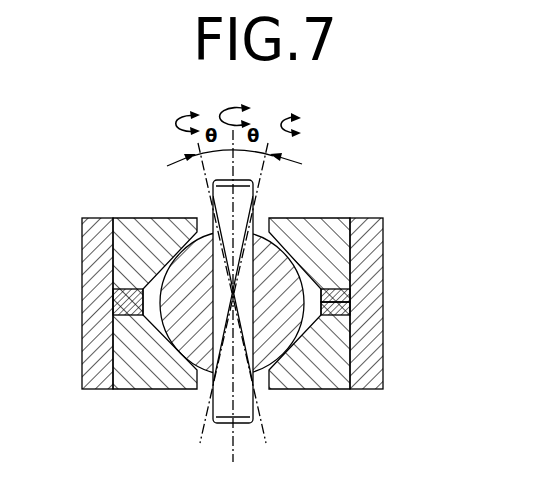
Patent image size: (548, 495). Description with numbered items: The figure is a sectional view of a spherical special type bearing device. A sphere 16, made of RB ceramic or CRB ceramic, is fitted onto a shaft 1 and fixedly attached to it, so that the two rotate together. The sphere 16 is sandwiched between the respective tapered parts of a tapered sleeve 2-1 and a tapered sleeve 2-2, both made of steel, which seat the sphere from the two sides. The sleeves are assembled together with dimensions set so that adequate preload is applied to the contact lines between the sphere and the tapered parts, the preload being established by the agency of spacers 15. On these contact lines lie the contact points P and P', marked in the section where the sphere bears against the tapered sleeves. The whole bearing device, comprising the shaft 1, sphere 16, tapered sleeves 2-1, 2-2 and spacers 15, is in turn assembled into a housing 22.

The shaft 1 is at (246, 217).
The tapered sleeve 2-1 is at (340, 247).
The tapered sleeve 2-2 is at (322, 353).
The spacers 15 is at (340, 298).
The sphere 16 is at (143, 219).
The housing 22 is at (102, 324).
The contact point P is at (347, 195).
The contact point P' is at (323, 414).